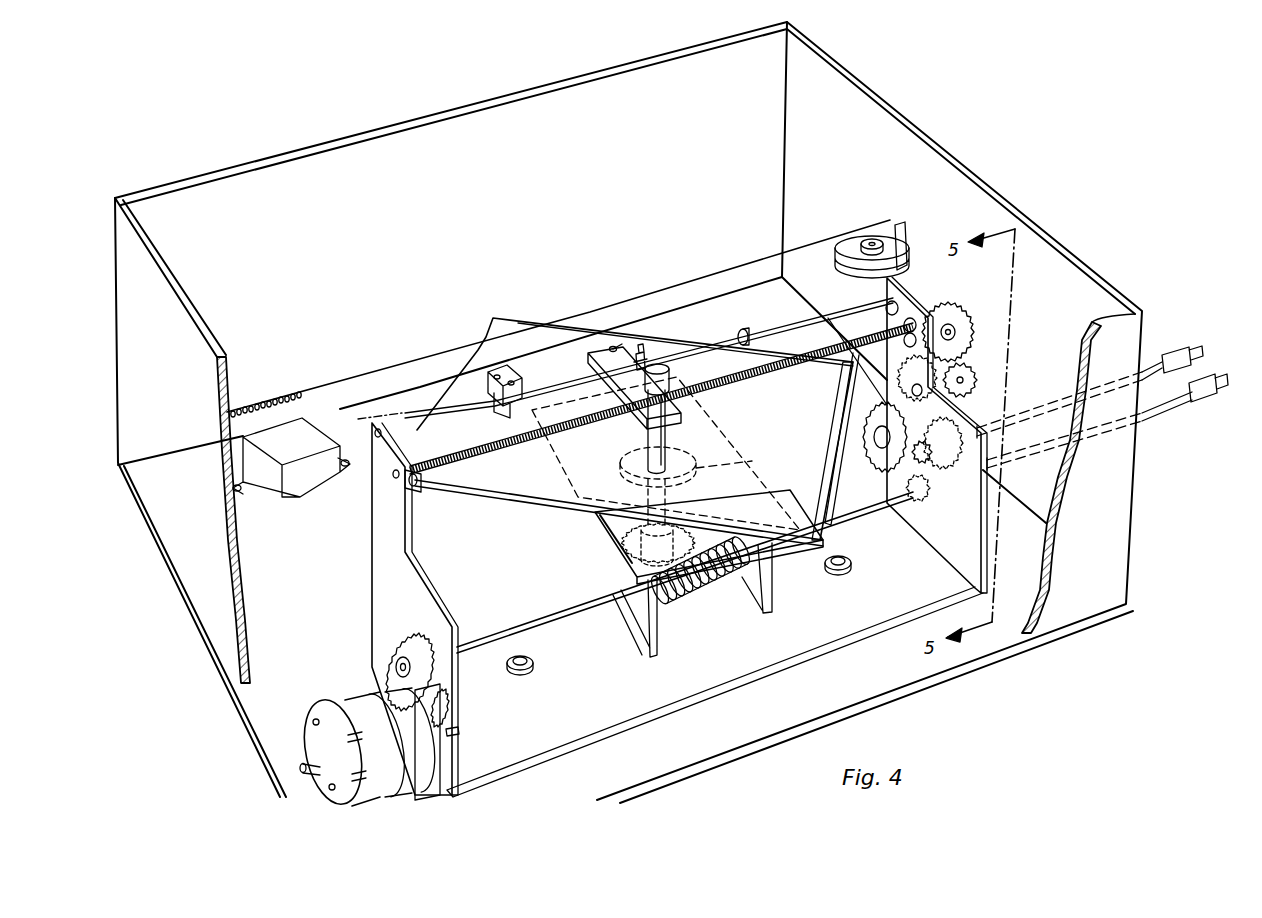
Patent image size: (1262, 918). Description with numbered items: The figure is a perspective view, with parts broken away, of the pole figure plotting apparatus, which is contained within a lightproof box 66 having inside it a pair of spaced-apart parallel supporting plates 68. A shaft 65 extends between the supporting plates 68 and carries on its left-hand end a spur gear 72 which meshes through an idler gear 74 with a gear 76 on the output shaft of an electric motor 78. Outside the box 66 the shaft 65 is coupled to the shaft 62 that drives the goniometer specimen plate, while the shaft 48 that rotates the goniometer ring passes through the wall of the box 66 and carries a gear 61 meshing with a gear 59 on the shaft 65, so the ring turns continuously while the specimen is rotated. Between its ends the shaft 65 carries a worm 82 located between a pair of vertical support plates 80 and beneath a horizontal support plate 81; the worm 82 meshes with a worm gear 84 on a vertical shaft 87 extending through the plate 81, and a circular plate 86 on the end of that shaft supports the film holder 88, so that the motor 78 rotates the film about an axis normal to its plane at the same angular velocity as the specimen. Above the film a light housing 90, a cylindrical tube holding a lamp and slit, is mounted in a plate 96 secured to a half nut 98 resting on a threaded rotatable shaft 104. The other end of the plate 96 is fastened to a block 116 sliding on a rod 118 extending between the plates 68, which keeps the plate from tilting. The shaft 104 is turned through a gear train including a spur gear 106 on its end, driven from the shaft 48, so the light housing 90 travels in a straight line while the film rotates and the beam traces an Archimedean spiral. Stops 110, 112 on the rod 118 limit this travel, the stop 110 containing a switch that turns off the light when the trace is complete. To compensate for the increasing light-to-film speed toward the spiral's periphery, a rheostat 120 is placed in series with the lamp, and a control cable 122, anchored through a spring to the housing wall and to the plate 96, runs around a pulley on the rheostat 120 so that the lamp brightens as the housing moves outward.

The shaft 48 is at (985, 425).
The gear 59 is at (945, 493).
The gear 61 is at (990, 452).
The shaft 62 is at (1210, 396).
The shaft 65 is at (880, 507).
The lightproof box 66 is at (1130, 512).
The supporting plates 68 is at (372, 548).
The spur gear 72 is at (408, 636).
The idler gear 74 is at (449, 706).
The gear 76 is at (455, 733).
The electric motor 78 is at (333, 700).
The vertical support plates 80 is at (773, 590).
The horizontal support plate 81 is at (612, 530).
The worm 82 is at (695, 590).
The worm gear 84 is at (625, 550).
The circular plate 86 is at (740, 460).
The vertical shaft 87 is at (612, 522).
The film holder 88 is at (460, 490).
The light housing 90 is at (690, 430).
The plate 96 is at (630, 420).
The half nut 98 is at (612, 428).
The threaded rotatable shaft 104 is at (420, 480).
The spur gear 106 is at (928, 310).
The stop 110 is at (510, 383).
The stop 112 is at (742, 328).
The block 116 is at (583, 322).
The rod 118 is at (785, 320).
The rheostat 120 is at (850, 243).
The control cable 122 is at (700, 280).